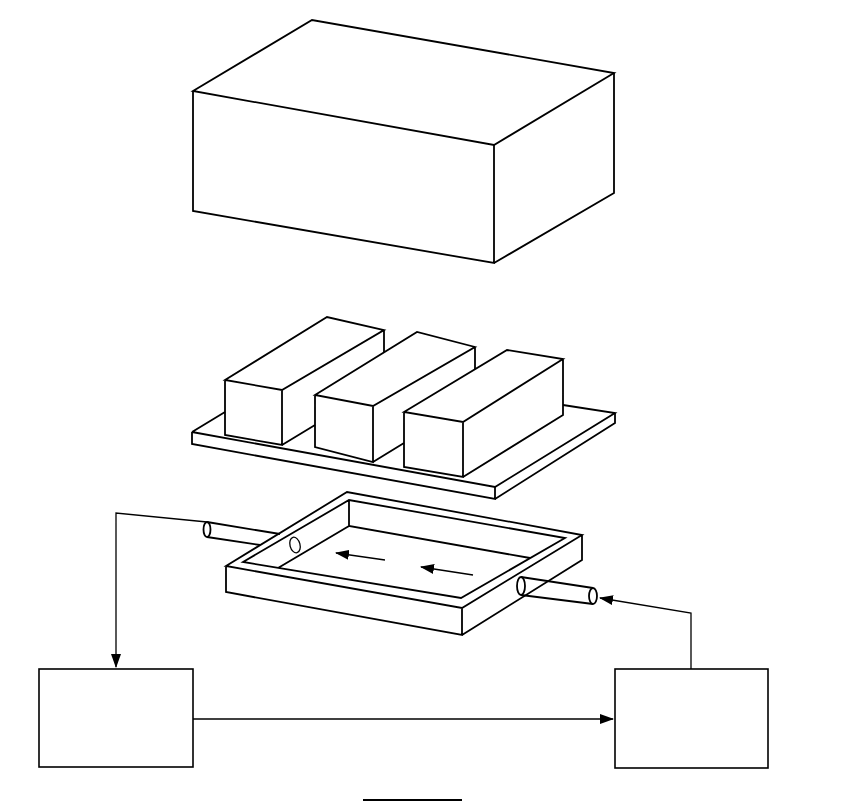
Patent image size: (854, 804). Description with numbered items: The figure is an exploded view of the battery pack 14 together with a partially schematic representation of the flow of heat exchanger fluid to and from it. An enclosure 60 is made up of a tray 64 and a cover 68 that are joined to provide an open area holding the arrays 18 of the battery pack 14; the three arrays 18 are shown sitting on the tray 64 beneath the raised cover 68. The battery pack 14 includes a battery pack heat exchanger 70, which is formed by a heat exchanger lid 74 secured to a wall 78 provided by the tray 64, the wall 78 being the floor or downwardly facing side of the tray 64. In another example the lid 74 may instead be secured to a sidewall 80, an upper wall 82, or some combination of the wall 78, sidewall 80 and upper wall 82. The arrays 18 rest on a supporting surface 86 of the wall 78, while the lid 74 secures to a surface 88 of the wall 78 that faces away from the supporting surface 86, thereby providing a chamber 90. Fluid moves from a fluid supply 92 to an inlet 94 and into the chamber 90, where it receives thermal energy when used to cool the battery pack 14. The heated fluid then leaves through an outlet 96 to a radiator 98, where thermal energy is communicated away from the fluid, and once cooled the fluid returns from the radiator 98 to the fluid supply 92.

The battery pack 14 is at (701, 160).
The arrays 18 is at (350, 332).
The enclosure 60 is at (575, 187).
The tray 64 is at (562, 452).
The cover 68 is at (602, 145).
The battery pack heat exchanger 70 is at (521, 632).
The heat exchanger lid 74 is at (372, 606).
The wall 78 is at (527, 480).
The sidewall 80 is at (212, 160).
The upper wall 82 is at (268, 78).
The supporting surface 86 is at (572, 428).
The surface 88 is at (277, 458).
The chamber 90 is at (189, 481).
The fluid supply 92 is at (679, 751).
The inlet 94 is at (546, 588).
The outlet 96 is at (230, 535).
The radiator 98 is at (104, 751).